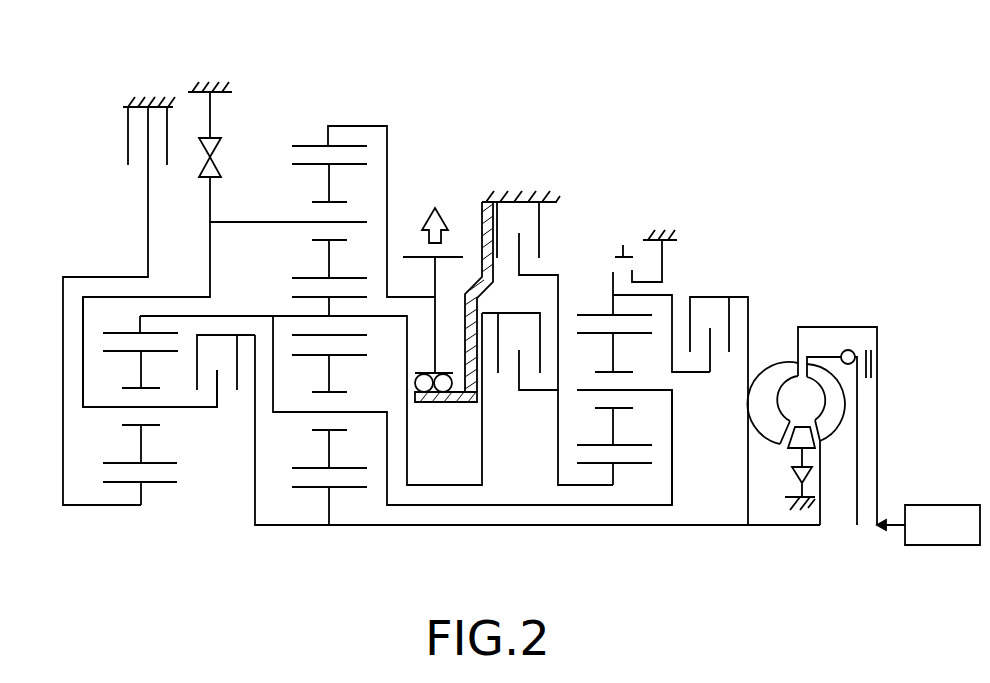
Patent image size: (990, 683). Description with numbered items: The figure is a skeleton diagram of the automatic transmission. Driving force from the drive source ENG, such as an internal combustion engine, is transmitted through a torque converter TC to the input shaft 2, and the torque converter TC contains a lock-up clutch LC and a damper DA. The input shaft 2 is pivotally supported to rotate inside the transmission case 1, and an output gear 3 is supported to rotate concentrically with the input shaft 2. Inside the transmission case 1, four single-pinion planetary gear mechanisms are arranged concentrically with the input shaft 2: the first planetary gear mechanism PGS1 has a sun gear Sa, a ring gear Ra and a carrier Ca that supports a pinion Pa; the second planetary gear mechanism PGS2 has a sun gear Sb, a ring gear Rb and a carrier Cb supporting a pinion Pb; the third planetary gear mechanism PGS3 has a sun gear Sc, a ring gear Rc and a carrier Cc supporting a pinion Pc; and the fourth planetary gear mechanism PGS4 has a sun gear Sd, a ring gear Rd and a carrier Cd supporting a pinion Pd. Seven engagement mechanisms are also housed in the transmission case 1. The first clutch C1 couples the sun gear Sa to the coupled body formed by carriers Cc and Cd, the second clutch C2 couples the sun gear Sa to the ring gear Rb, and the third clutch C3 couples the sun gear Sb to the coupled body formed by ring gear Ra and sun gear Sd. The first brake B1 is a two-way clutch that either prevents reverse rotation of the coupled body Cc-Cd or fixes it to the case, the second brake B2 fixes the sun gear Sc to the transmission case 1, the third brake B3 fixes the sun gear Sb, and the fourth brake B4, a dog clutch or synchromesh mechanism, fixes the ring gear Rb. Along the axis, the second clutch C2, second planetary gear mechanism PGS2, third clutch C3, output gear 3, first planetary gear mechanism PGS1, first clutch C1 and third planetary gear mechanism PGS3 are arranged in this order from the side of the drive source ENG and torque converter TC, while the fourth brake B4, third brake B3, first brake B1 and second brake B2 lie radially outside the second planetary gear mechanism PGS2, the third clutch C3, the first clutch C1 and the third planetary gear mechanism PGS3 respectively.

The transmission case 1 is at (150, 104).
The input shaft 2 is at (777, 527).
The output gear 3 is at (416, 256).
The first brake B1 is at (224, 138).
The second brake B2 is at (115, 306).
The third brake B3 is at (555, 343).
The fourth brake B4 is at (621, 248).
The first clutch C1 is at (226, 371).
The second clutch C2 is at (719, 411).
The third clutch C3 is at (520, 351).
The first planetary gear mechanism PGS1 is at (305, 502).
The second planetary gear mechanism PGS2 is at (605, 494).
The third planetary gear mechanism PGS3 is at (135, 507).
The fourth planetary gear mechanism PGS4 is at (350, 124).
The sun gear Sa is at (345, 489).
The carrier Ca is at (281, 414).
The ring gear Ra is at (355, 338).
The pinion Pa is at (352, 470).
The sun gear Sb is at (628, 466).
The carrier Cb is at (652, 392).
The ring gear Rb is at (592, 312).
The pinion Pb is at (640, 448).
The sun gear Sc is at (165, 486).
The carrier Cc is at (95, 410).
The ring gear Rc is at (122, 331).
The pinion Pc is at (165, 465).
The sun gear Sd is at (304, 293).
The carrier Cd is at (297, 219).
The ring gear Rd is at (310, 146).
The pinion Pd is at (304, 276).
The torque converter TC is at (794, 333).
The damper DA is at (851, 349).
The lock-up clutch LC is at (876, 360).
The drive source ENG is at (928, 525).